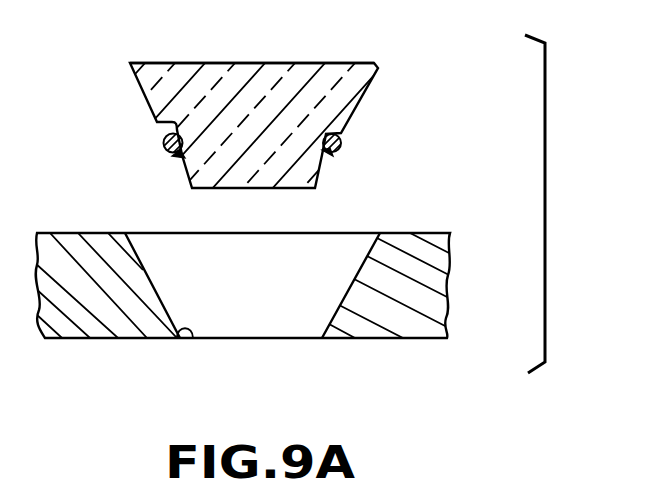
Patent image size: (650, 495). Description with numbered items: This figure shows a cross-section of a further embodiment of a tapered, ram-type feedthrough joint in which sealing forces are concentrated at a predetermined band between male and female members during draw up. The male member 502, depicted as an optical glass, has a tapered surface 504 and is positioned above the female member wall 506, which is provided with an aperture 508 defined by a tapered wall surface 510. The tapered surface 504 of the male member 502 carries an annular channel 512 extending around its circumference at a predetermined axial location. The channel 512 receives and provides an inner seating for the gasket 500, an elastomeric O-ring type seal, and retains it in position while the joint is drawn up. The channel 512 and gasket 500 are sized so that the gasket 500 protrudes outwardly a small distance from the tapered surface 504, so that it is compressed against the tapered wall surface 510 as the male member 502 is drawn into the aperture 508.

The gasket 500 is at (172, 155).
The male member 502 is at (162, 62).
The tapered surface 504 is at (372, 85).
The female member wall 506 is at (428, 267).
The aperture 508 is at (245, 323).
The tapered wall surface 510 is at (190, 340).
The annular channel 512 is at (157, 123).